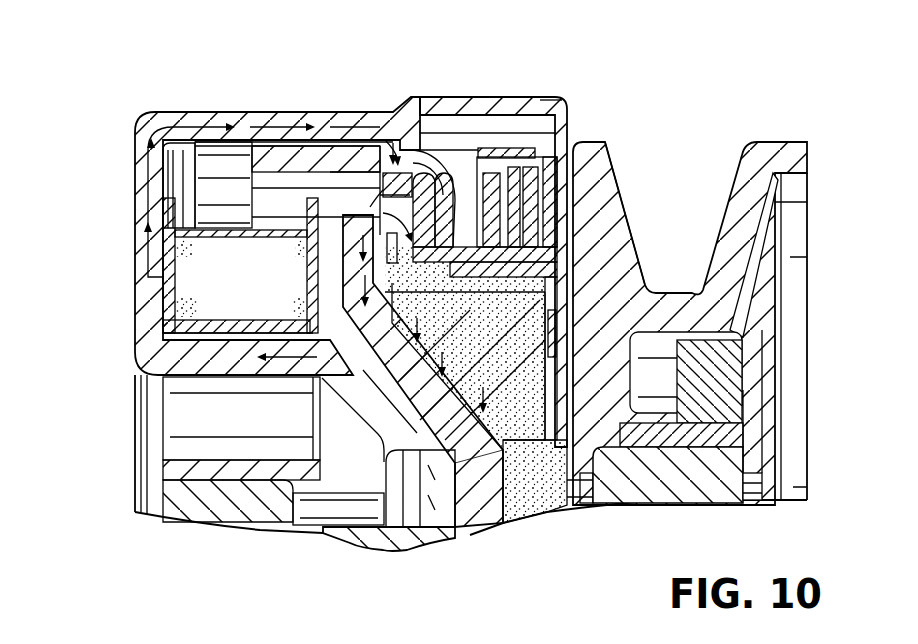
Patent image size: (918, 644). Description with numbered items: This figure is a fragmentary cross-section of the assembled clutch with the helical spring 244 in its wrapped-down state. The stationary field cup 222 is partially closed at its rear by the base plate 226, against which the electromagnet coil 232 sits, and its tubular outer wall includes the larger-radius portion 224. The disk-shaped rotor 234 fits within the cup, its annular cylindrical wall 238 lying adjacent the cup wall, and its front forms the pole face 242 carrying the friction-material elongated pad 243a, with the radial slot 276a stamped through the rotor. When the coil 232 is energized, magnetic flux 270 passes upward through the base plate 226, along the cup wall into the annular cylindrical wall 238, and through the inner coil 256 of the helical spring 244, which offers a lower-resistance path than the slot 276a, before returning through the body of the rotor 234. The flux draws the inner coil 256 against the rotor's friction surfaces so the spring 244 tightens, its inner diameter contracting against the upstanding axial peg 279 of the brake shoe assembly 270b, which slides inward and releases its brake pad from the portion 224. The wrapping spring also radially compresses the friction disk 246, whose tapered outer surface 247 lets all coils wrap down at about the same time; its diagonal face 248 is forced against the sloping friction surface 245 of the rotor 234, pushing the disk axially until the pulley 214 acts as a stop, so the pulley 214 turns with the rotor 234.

The pulley 214 is at (717, 125).
The field cup 222 is at (141, 86).
The portion of the tubular outer wall of the field cup 224 is at (462, 106).
The base plate 226 is at (137, 197).
The electromagnet coil 232 is at (163, 337).
The rotor 234 is at (360, 540).
The annular cylindrical wall 238 is at (257, 163).
The pole face 242 is at (418, 150).
The elongated pad 243a is at (420, 272).
The helical spring 244 is at (533, 120).
The sloping friction surface 245 is at (355, 425).
The friction disk 246 is at (543, 505).
The outer surface of the friction disk 247 is at (374, 245).
The diagonal face 248 is at (475, 505).
The inner coil 256 is at (433, 140).
The magnetic flux 270 is at (135, 307).
The brake shoe assembly 270b is at (556, 101).
The radial slot 276a is at (382, 160).
The upstanding axial peg 279 is at (606, 237).